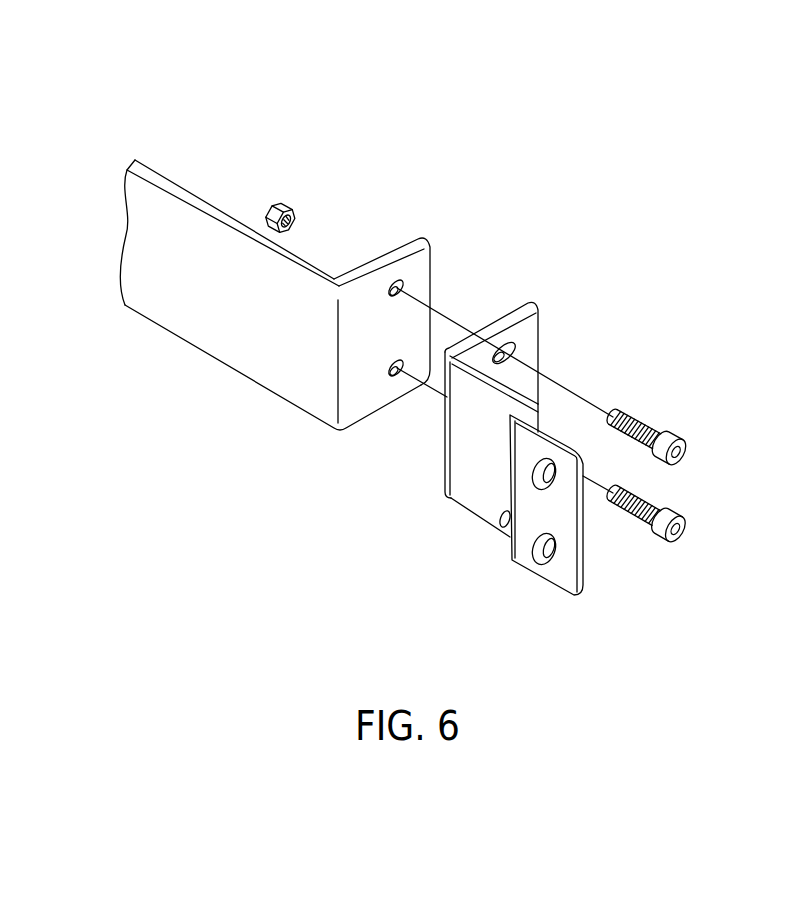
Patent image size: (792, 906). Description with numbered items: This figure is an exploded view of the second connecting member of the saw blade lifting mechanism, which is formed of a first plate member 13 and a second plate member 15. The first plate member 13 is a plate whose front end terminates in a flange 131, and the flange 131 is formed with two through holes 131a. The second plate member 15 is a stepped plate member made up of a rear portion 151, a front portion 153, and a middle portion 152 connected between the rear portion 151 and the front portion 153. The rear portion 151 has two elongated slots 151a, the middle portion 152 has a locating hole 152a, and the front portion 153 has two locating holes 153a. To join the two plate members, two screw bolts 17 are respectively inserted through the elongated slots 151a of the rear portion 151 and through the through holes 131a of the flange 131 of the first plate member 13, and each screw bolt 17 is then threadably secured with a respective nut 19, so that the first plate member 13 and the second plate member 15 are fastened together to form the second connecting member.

The support plate 13 is at (218, 340).
The flange of support plate 131 is at (422, 273).
The through holes of flange 131a is at (393, 281).
The connecting bracket 15 is at (561, 457).
The first plate of connecting bracket 151 is at (530, 327).
The hole of first plate 151a is at (503, 341).
The second plate of connecting bracket 152 is at (500, 408).
The hole of second plate 152a is at (500, 520).
The third plate of connecting bracket 153 is at (531, 452).
The through holes of third plate 153a is at (545, 483).
The screws 17 is at (690, 451).
The nut 19 is at (266, 211).